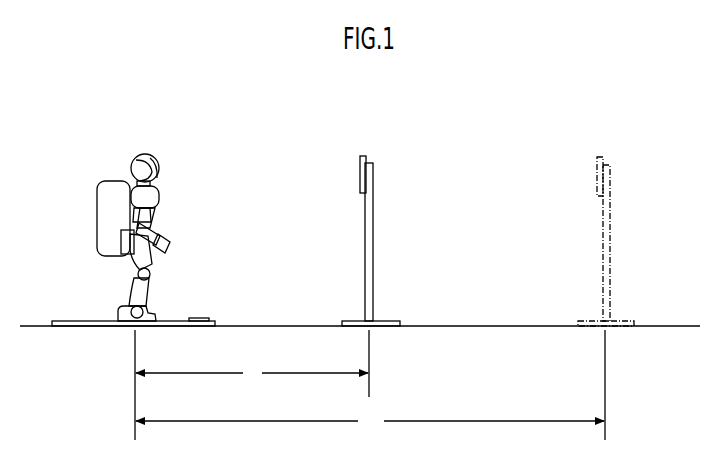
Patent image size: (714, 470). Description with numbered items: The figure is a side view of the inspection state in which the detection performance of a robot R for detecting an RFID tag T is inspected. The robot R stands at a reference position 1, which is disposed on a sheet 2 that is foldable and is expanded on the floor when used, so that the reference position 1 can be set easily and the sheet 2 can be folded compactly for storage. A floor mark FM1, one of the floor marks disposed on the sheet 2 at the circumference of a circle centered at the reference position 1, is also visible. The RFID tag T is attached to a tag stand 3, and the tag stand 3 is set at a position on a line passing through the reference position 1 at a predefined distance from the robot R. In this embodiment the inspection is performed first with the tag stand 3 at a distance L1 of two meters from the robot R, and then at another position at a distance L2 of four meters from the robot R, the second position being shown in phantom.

The reference position 1 is at (130, 331).
The sheet 2 is at (58, 321).
The floor mark FM1 is at (198, 318).
The robot R is at (111, 150).
The tag stand 3 is at (374, 240).
The RFID tag T is at (360, 164).
The distance L1 is at (252, 373).
The distance L2 is at (370, 422).